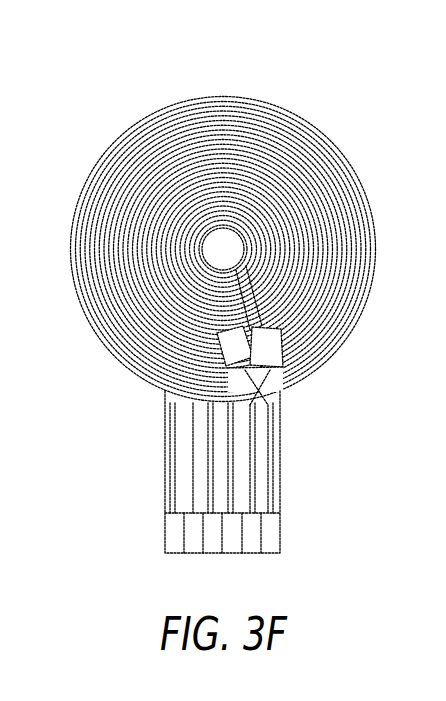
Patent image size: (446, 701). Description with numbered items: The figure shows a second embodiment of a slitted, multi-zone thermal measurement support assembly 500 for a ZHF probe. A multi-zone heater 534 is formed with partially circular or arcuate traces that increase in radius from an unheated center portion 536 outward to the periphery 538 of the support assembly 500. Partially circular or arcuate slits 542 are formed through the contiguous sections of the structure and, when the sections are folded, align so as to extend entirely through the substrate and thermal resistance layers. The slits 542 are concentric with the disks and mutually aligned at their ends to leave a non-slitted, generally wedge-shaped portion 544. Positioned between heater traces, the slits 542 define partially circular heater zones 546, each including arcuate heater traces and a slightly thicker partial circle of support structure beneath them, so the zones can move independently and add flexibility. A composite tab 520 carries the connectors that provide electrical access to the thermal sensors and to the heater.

The support assembly 500 is at (173, 72).
The multi-zone heater 534 is at (312, 113).
The unheated center portion 536 is at (230, 247).
The partially circular heater zones 546 is at (208, 208).
The partially circular slits 542 is at (200, 222).
The periphery 538 is at (150, 388).
The wedge-shaped portion 544 is at (192, 372).
The composite tab 520 is at (283, 455).